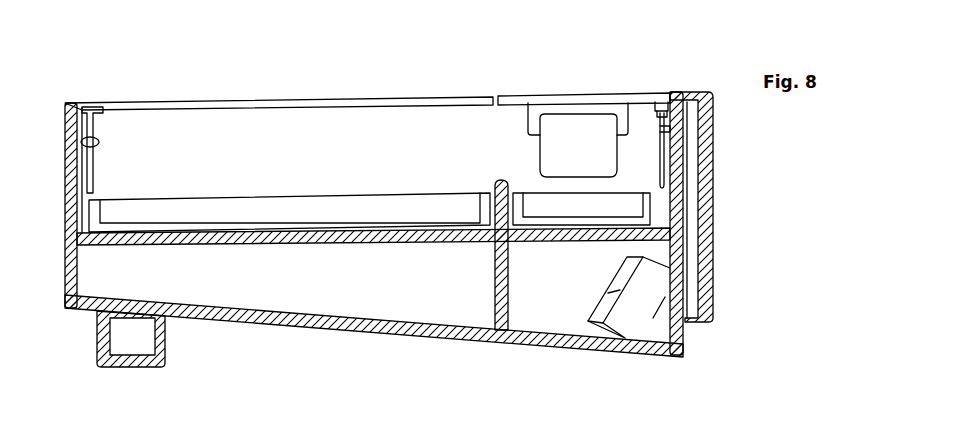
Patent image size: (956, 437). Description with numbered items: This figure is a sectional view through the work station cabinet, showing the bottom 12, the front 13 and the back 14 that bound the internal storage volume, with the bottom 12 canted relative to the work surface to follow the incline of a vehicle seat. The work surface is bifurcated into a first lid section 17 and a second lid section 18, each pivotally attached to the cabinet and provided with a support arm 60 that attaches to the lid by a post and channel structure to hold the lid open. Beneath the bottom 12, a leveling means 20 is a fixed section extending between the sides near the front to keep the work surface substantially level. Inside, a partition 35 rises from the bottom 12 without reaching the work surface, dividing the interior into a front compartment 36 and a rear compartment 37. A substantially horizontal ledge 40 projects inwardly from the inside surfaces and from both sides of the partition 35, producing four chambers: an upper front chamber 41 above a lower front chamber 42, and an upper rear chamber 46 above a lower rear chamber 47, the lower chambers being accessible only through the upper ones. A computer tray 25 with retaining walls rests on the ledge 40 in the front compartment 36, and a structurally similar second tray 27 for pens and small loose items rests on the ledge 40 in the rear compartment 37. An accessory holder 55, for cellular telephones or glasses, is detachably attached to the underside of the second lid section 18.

The bottom 12 is at (213, 320).
The front 13 is at (66, 242).
The back 14 is at (690, 270).
The first lid section 17 is at (391, 99).
The second lid section 18 is at (540, 103).
The leveling means 20 is at (98, 341).
The computer tray 25 is at (148, 210).
The second tray 27 is at (648, 212).
The partition 35 is at (496, 297).
The front compartment 36 is at (268, 346).
The rear compartment 37 is at (588, 365).
The ledge 40 is at (402, 234).
The upper front chamber 41 is at (288, 150).
The lower front chamber 42 is at (325, 275).
The upper rear chamber 46 is at (637, 150).
The lower rear chamber 47 is at (602, 267).
The accessory holder 55 is at (614, 113).
The support arm 60 is at (671, 150).